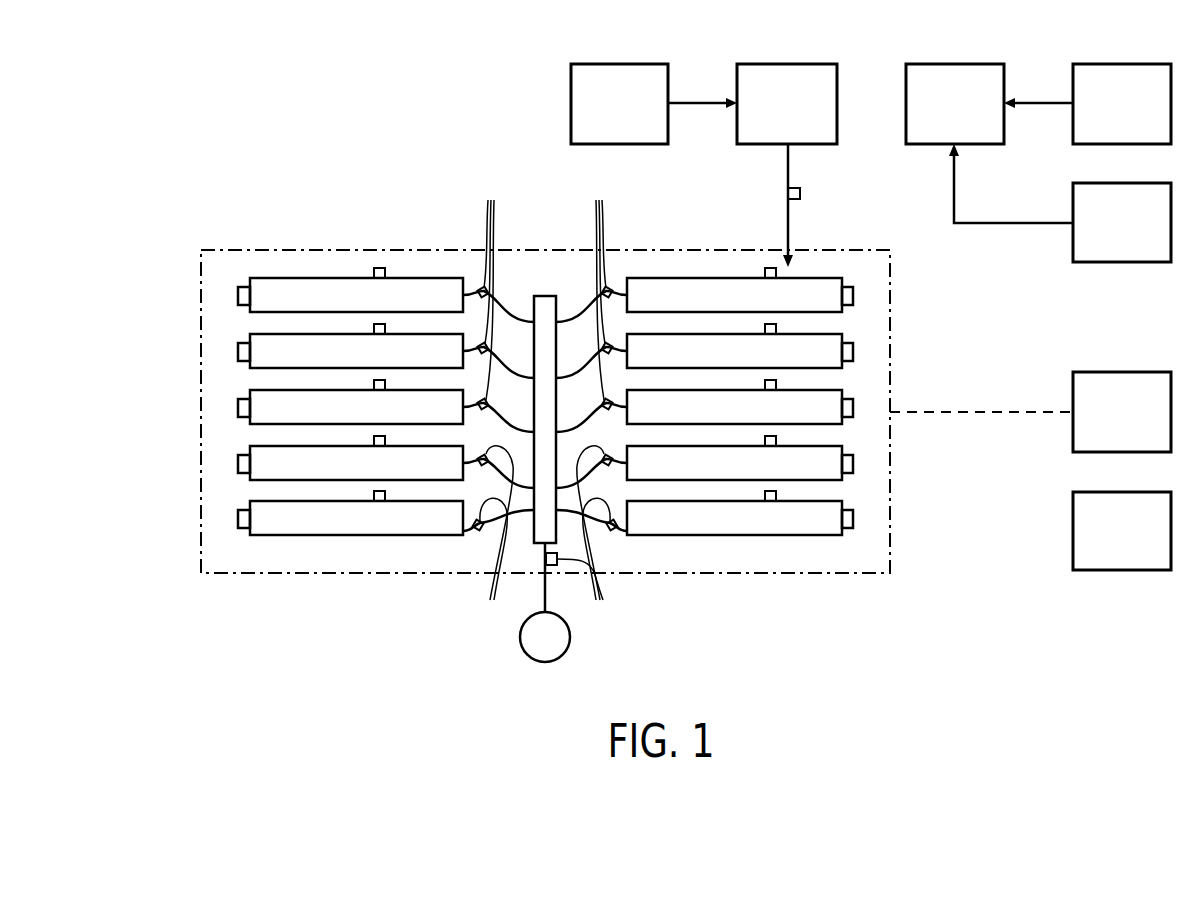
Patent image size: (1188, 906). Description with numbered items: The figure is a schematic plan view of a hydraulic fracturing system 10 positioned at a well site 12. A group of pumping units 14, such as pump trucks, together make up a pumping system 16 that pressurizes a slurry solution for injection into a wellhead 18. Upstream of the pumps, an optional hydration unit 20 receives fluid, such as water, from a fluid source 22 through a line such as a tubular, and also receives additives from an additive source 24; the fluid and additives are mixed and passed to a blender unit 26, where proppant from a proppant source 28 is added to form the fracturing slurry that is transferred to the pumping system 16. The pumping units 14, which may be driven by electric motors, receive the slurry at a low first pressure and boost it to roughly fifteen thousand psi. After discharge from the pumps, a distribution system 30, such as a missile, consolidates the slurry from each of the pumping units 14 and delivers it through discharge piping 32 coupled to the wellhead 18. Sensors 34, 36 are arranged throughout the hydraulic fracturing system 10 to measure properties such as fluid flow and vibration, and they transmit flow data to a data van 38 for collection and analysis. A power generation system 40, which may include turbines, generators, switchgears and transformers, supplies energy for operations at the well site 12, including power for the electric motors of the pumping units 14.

The hydraulic fracturing system 10 is at (173, 129).
The well site 12 is at (208, 686).
The pumping units 14 is at (332, 308).
The pumping system 16 is at (214, 249).
The wellhead 18 is at (532, 651).
The hydration unit 20 is at (942, 117).
The fluid source 22 is at (1109, 117).
The additive source 24 is at (1109, 236).
The blender unit 26 is at (774, 117).
The proppant source 28 is at (606, 117).
The distribution system 30 is at (545, 305).
The discharge piping 32 is at (543, 607).
The sensors 34 is at (955, 525).
The sensors 36 is at (238, 296).
The data van 38 is at (1109, 425).
The power generation system 40 is at (1109, 545).